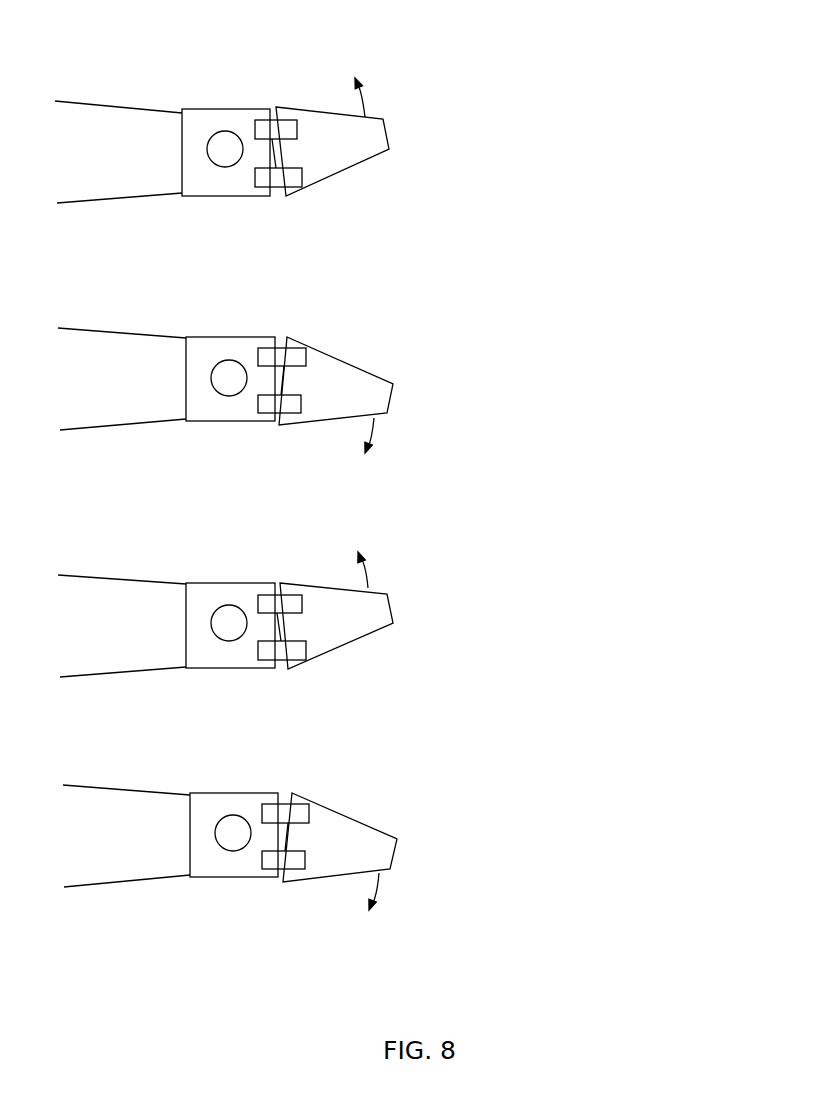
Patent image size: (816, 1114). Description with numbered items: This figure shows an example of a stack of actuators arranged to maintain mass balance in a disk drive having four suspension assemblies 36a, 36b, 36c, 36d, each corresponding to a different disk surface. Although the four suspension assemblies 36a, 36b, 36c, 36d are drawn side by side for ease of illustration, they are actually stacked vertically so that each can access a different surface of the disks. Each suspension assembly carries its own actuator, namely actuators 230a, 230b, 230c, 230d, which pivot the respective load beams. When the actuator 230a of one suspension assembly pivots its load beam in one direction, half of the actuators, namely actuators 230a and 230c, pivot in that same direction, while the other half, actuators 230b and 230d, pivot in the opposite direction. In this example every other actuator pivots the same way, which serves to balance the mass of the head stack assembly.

The suspension assembly 36a is at (395, 80).
The actuator 230a is at (270, 211).
The suspension assembly 36b is at (378, 341).
The actuator 230b is at (267, 438).
The suspension assembly 36c is at (399, 537).
The actuator 230c is at (275, 683).
The suspension assembly 36d is at (403, 798).
The actuator 230d is at (270, 893).